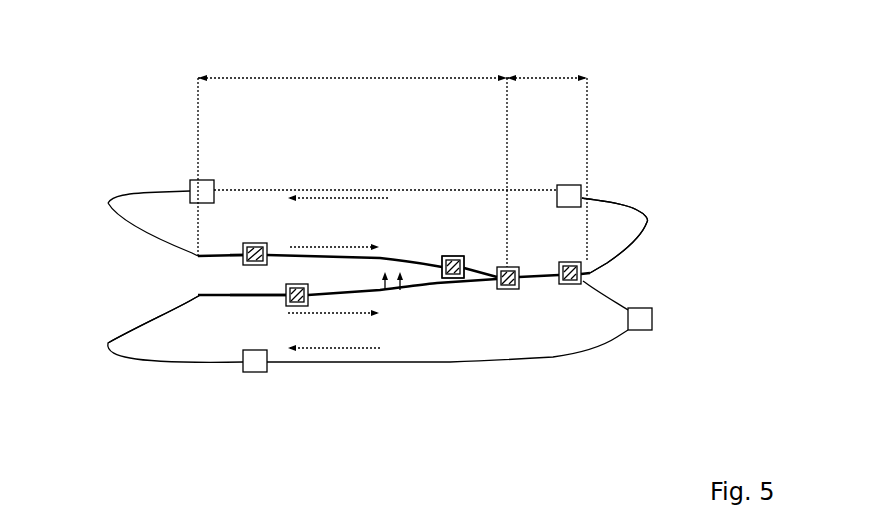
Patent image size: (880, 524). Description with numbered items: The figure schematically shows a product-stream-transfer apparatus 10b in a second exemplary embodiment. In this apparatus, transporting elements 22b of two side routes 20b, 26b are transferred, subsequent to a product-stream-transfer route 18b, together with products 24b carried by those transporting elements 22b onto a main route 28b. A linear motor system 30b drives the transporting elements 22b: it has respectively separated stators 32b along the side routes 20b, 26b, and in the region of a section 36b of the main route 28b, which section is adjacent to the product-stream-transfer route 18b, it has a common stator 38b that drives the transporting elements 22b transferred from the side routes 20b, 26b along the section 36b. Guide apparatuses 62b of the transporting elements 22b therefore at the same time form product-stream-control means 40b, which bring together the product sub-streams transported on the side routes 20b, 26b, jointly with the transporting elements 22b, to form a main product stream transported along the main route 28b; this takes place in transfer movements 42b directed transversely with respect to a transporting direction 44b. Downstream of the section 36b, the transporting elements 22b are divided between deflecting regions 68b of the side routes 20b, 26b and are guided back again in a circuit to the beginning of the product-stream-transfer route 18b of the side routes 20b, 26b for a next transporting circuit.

The product-stream-transfer apparatus 10b is at (527, 176).
The product-stream-transfer route 18b is at (353, 78).
The section 36b is at (548, 78).
The side route 20b is at (383, 257).
The products 24b is at (503, 267).
The transporting elements 22b is at (500, 290).
The side route 26b is at (385, 290).
The main route 28b is at (526, 286).
The linear motor system 30b is at (200, 310).
The stators 32b is at (231, 255).
The common stator 38b is at (541, 286).
The product-stream-control means 40b is at (453, 267).
The transfer movements 42b is at (414, 288).
The transporting direction 44b is at (337, 312).
The guide apparatuses 62b is at (450, 278).
The deflecting regions 68b is at (583, 280).